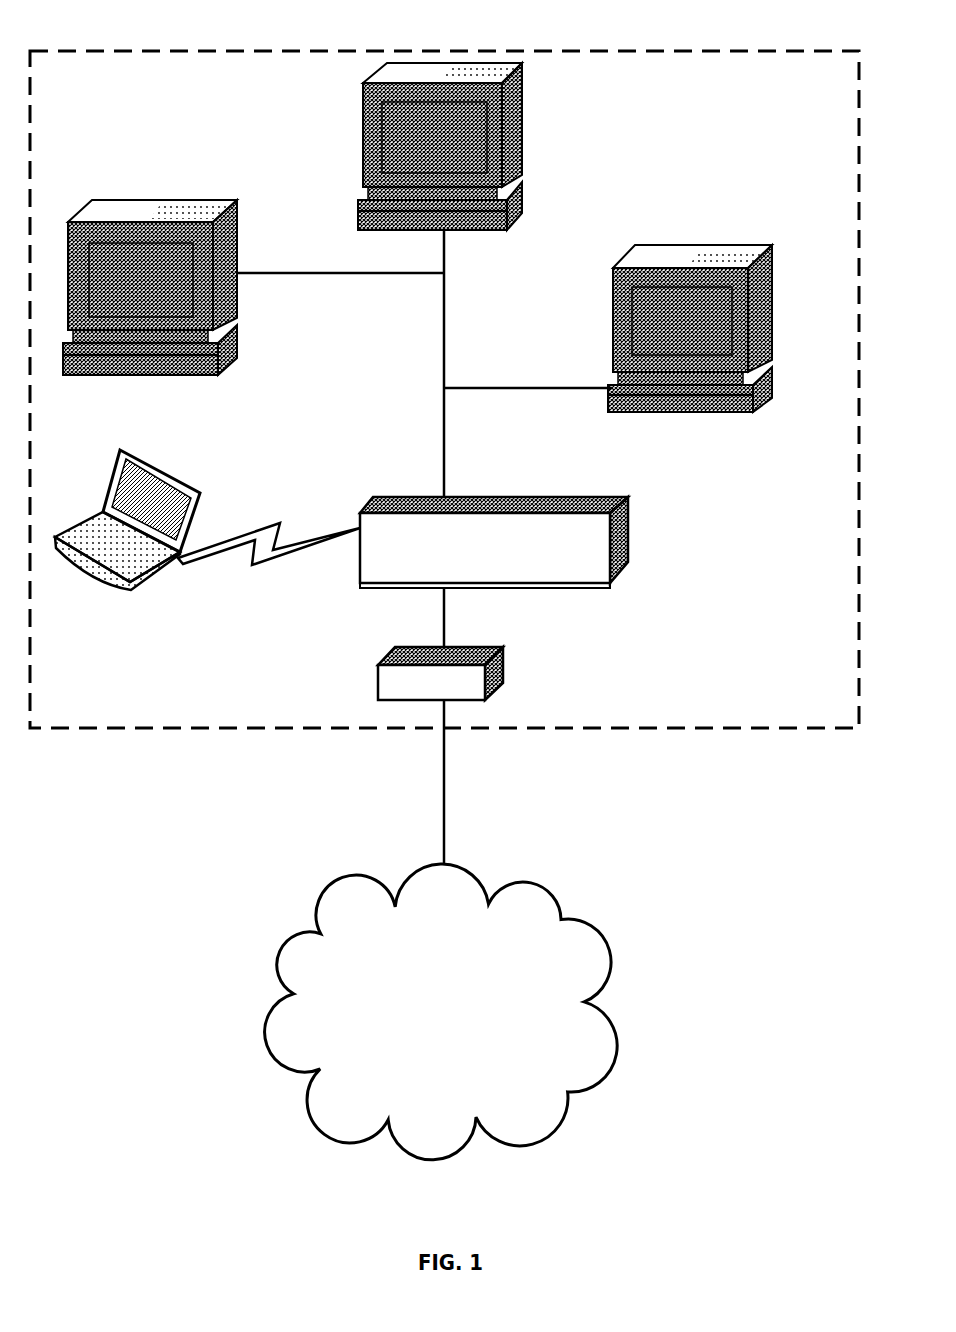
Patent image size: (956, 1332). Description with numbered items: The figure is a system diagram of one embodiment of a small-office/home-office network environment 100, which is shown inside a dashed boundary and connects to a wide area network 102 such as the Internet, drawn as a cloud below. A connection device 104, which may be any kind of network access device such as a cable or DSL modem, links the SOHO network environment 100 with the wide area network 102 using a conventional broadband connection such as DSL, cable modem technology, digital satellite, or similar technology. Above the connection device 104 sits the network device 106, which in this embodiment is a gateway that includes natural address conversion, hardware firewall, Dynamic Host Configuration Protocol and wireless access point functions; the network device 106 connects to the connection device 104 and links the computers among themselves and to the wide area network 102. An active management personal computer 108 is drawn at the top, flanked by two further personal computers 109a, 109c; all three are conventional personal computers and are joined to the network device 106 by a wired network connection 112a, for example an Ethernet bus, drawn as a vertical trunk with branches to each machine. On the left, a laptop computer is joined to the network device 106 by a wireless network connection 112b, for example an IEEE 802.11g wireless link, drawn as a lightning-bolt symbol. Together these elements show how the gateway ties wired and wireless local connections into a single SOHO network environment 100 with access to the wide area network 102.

The SOHO network environment 100 is at (485, 52).
The wide area network 102 is at (460, 1038).
The connection device 104 is at (504, 662).
The network device 106 is at (629, 538).
The active management personal computer 108 is at (363, 123).
The personal computer 109a is at (150, 200).
The personal computer 109c is at (688, 245).
The wired network connection 112a is at (445, 335).
The wireless network connection 112b is at (262, 523).